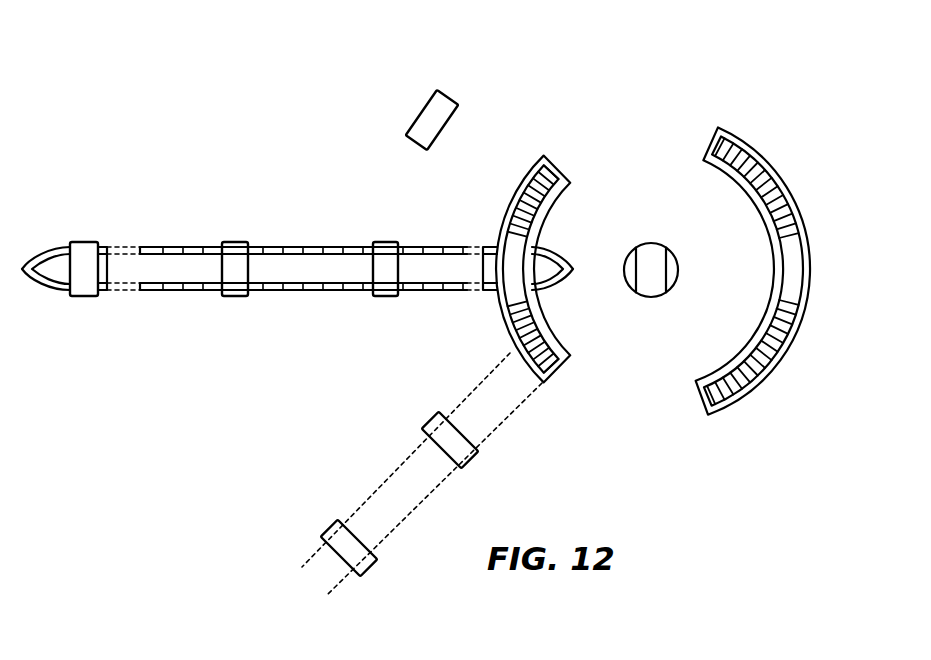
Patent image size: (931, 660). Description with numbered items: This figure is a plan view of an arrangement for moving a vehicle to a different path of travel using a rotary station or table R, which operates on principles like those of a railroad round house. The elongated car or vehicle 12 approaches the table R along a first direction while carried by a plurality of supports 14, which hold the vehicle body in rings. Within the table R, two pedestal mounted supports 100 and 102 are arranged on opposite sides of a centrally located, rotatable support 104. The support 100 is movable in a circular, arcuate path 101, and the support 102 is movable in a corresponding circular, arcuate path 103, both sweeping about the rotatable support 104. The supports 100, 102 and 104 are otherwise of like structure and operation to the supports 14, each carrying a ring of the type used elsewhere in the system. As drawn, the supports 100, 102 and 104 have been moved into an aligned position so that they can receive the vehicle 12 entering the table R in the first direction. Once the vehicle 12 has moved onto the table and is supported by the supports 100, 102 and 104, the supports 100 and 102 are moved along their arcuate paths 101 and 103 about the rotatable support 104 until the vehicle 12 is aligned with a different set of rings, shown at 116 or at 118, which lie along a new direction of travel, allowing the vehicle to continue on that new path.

The vehicle 12 is at (122, 292).
The supports 14 is at (80, 242).
The pedestal mounted support 100 is at (507, 247).
The arcuate path 101 is at (535, 197).
The pedestal mounted support 102 is at (796, 270).
The arcuate path 103 is at (777, 181).
The rotatable support 104 is at (652, 243).
The rings 116 is at (420, 112).
The rings 118 is at (428, 418).
The rotary station or table R is at (752, 102).